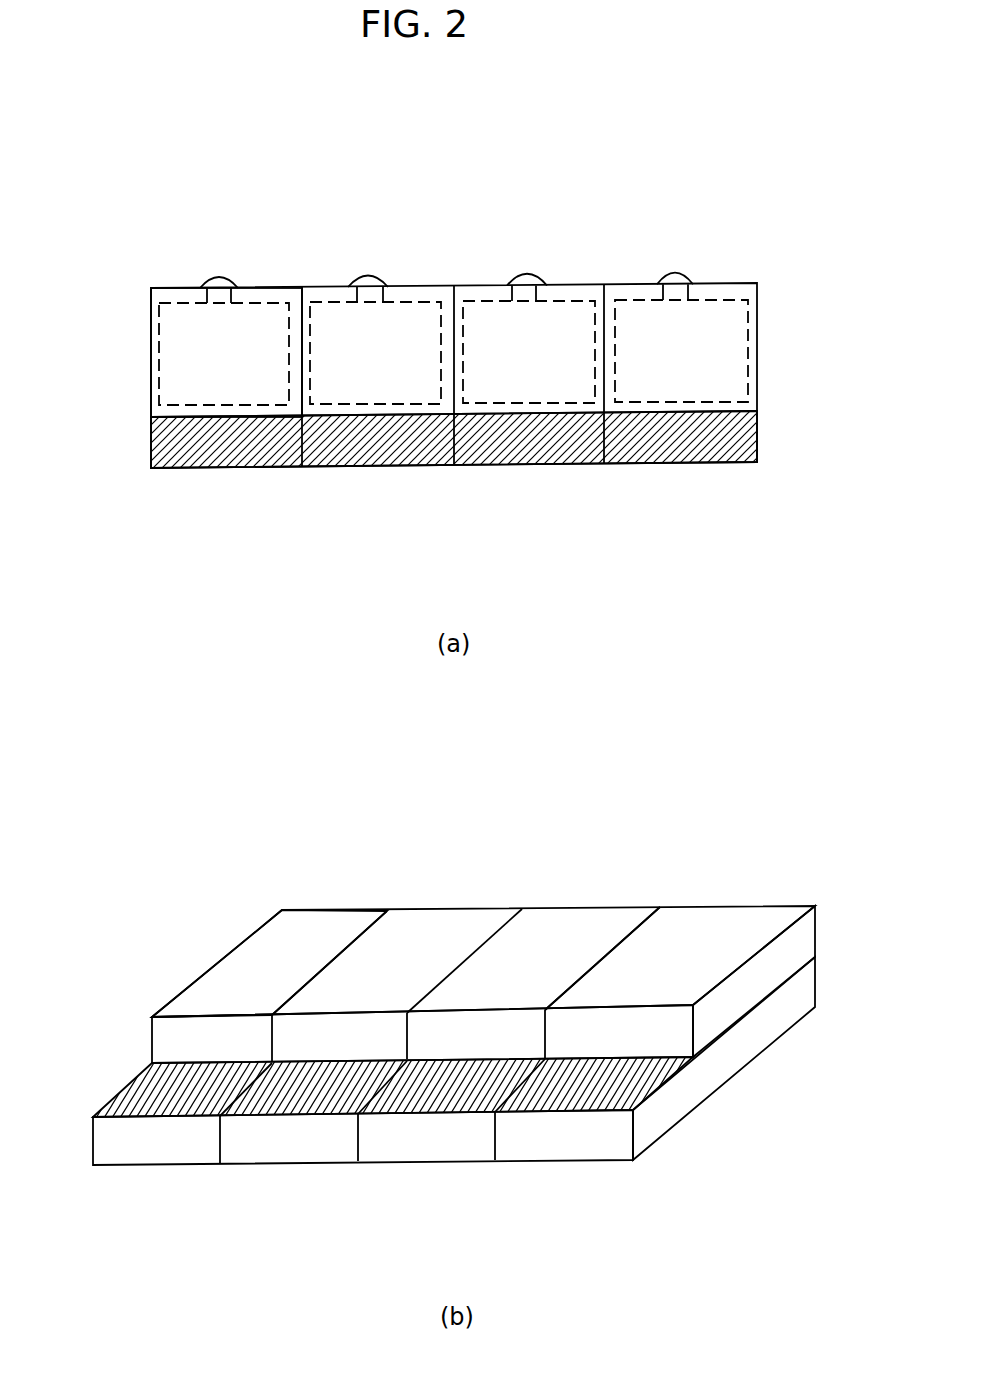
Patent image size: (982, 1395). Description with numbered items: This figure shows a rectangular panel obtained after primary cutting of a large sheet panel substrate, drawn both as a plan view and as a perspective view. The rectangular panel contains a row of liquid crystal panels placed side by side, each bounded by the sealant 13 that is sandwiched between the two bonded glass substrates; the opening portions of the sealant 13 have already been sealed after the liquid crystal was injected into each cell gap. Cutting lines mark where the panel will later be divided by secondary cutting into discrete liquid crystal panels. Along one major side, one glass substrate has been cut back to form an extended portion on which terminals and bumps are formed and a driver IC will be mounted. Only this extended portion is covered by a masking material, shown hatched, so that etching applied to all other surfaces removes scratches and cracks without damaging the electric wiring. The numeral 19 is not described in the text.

The sealant 13 is at (322, 302).
The lead terminal 19 is at (527, 273).